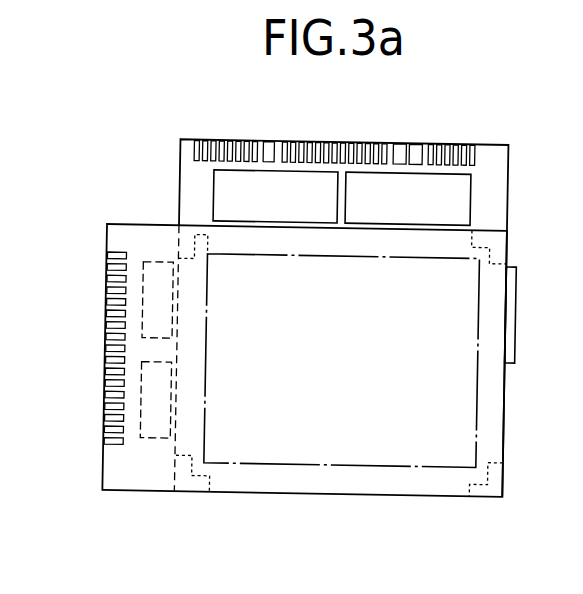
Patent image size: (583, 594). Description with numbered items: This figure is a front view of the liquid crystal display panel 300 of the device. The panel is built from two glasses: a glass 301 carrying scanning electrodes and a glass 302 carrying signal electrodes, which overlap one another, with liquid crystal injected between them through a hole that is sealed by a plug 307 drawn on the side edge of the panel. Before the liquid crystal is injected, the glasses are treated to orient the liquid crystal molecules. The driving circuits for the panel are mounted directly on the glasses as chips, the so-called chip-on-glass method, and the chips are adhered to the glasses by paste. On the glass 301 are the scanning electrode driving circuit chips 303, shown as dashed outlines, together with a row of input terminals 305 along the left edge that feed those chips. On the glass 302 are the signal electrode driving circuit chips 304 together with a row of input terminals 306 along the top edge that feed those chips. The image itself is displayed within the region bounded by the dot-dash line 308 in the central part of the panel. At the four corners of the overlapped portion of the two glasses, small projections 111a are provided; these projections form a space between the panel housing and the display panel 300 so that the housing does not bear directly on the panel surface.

The liquid crystal display panel 300 is at (507, 433).
The glass having scanning electrodes 301 is at (120, 223).
The glass having signal electrodes 302 is at (507, 165).
The scanning electrode driving circuit chips 303 is at (159, 282).
The signal electrode driving circuit chips 304 is at (227, 191).
The input terminals for scanning electrode driving circuit chips 305 is at (104, 247).
The input terminals for signal electrode driving circuit chips 306 is at (478, 129).
The plug 307 is at (515, 322).
The dot-dash line 308 is at (342, 459).
The projections 111a is at (213, 235).